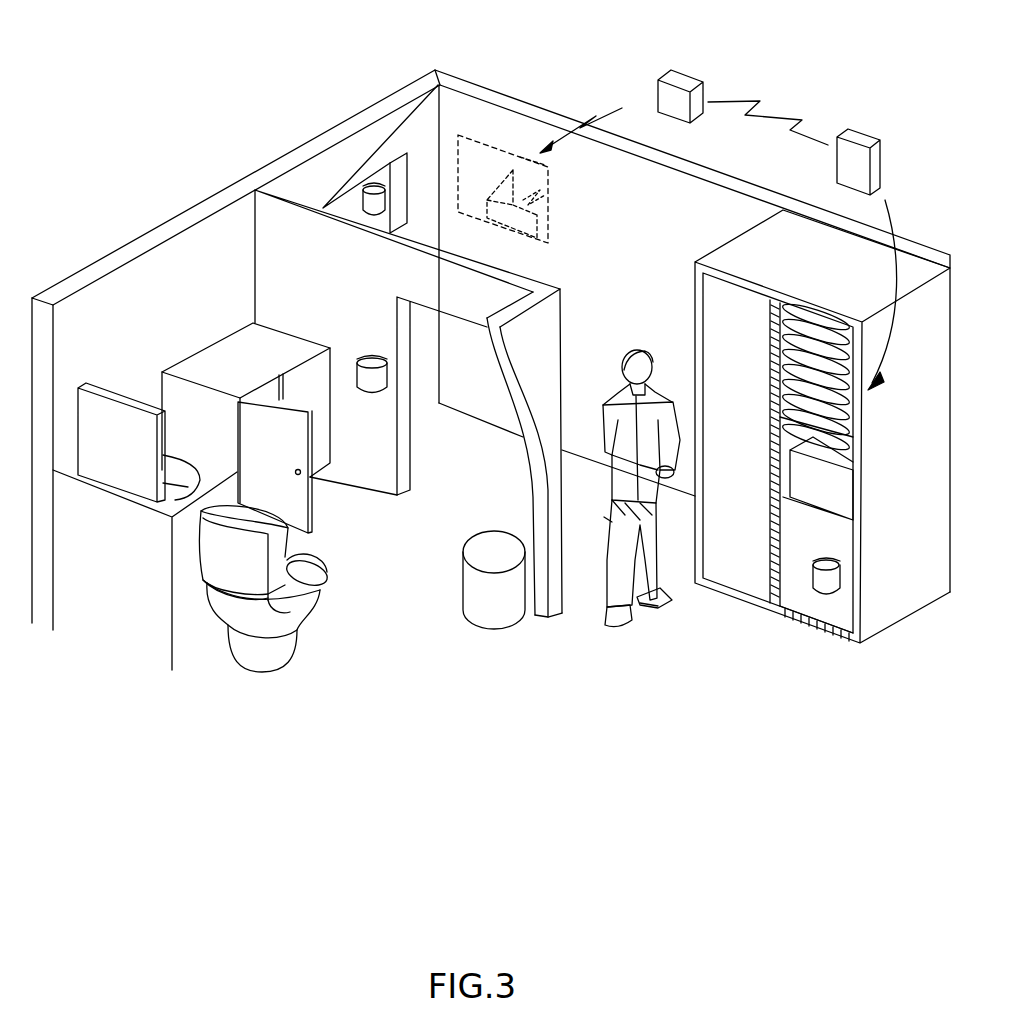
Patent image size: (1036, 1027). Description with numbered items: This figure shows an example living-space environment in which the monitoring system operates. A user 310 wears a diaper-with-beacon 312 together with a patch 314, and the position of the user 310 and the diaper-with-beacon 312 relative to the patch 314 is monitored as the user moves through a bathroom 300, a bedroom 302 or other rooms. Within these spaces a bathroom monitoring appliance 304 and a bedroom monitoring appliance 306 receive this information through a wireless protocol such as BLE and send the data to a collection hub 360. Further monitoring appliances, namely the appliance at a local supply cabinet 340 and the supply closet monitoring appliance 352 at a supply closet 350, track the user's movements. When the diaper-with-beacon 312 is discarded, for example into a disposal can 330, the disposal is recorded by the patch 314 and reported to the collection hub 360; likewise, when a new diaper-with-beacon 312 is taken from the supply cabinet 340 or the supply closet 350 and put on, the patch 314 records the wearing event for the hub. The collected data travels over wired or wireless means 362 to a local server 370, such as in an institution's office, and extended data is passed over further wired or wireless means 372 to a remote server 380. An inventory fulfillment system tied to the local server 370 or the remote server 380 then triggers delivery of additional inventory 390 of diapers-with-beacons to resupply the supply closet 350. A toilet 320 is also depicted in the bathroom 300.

The bathroom 300 is at (196, 247).
The bedroom 302 is at (300, 157).
The bathroom monitoring appliance 304 is at (365, 355).
The bedroom monitoring appliance 306 is at (380, 185).
The user 310 is at (640, 348).
The diaper-with-beacon 312 is at (607, 517).
The patch 314 is at (637, 610).
The toilet 320 is at (303, 638).
The disposal can 330 is at (476, 610).
The local supply cabinet 340 is at (197, 367).
The supply closet 350 is at (820, 313).
The supply closet monitoring appliance 352 is at (820, 580).
The collection hub 360 is at (550, 197).
The wired or wireless means 362 is at (620, 110).
The local server 370 is at (678, 75).
The wired or wireless means 372 is at (780, 110).
The remote server 380 is at (860, 145).
The additional inventory/quantity 390 is at (897, 352).